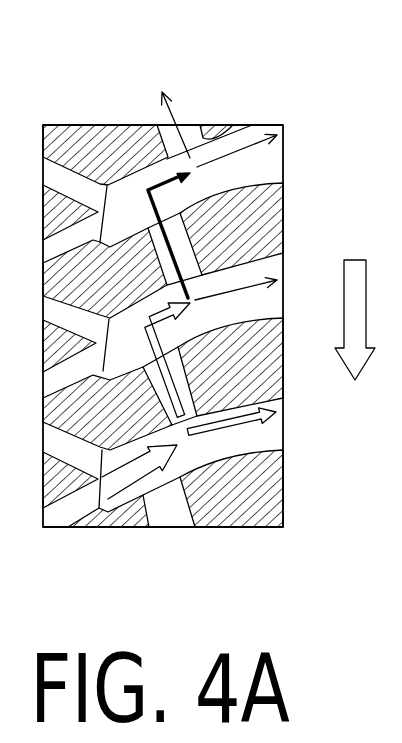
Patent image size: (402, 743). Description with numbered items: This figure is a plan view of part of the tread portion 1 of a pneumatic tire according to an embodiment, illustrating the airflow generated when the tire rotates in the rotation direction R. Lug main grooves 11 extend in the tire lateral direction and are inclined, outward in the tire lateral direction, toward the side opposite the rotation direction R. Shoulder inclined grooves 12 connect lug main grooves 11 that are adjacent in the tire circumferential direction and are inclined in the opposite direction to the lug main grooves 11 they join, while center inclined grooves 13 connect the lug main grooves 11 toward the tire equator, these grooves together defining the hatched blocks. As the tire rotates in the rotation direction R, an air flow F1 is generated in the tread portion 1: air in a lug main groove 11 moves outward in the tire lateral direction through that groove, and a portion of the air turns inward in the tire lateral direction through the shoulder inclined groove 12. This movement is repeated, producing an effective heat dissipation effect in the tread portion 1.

The tread portion 1 is at (232, 125).
The lug main groove 11 is at (270, 432).
The shoulder inclined groove 12 is at (180, 245).
The center inclined groove 13 is at (78, 167).
The air flow F1 is at (120, 473).
The rotation direction R is at (355, 306).